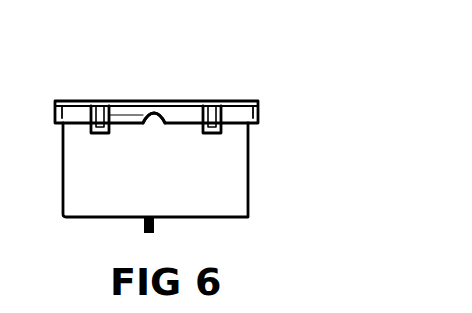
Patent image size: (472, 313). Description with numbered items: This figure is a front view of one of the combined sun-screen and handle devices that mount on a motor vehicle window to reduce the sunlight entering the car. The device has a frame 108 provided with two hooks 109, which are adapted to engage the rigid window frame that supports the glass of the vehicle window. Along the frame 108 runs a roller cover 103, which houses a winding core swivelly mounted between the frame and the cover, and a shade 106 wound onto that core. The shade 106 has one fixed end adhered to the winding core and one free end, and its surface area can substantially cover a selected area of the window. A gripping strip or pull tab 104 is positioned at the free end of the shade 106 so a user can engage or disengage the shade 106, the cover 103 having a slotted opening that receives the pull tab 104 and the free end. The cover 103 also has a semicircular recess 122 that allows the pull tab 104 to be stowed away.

The roller cover 103 is at (130, 116).
The pull tab 104 is at (157, 233).
The shade 106 is at (155, 170).
The frame 108 is at (260, 101).
The hooks 109 is at (98, 107).
The semicircular recess 122 is at (157, 123).